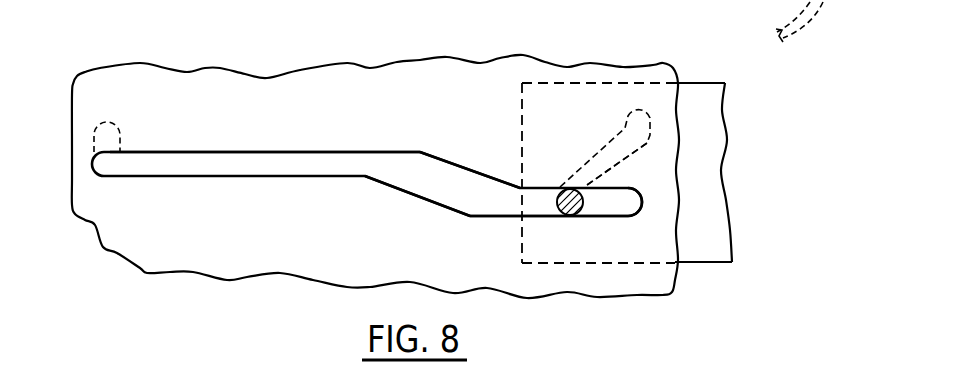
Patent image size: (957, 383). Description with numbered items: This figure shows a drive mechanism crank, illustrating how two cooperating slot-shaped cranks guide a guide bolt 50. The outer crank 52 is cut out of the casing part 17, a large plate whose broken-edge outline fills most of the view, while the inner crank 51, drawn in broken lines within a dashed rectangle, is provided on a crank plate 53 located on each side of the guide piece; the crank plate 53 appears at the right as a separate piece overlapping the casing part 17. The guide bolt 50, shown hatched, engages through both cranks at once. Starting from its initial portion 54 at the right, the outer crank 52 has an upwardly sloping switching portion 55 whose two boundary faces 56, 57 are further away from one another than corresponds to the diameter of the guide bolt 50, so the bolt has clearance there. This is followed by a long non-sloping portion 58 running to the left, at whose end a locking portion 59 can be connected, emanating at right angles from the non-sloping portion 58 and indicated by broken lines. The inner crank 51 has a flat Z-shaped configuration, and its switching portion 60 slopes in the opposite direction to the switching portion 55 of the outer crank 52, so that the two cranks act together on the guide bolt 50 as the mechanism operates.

The casing part 17 is at (214, 249).
The guide bolt 50 is at (578, 214).
The inner crank 51 is at (602, 143).
The outer crank 52 is at (367, 149).
The crank plate 53 is at (715, 178).
The initial portion 54 is at (619, 216).
The switching portion 55 is at (450, 187).
The boundary face 56 is at (409, 192).
The boundary face 57 is at (463, 173).
The non-sloping portion 58 is at (250, 162).
The locking portion 59 is at (122, 136).
The switching portion 60 is at (622, 158).